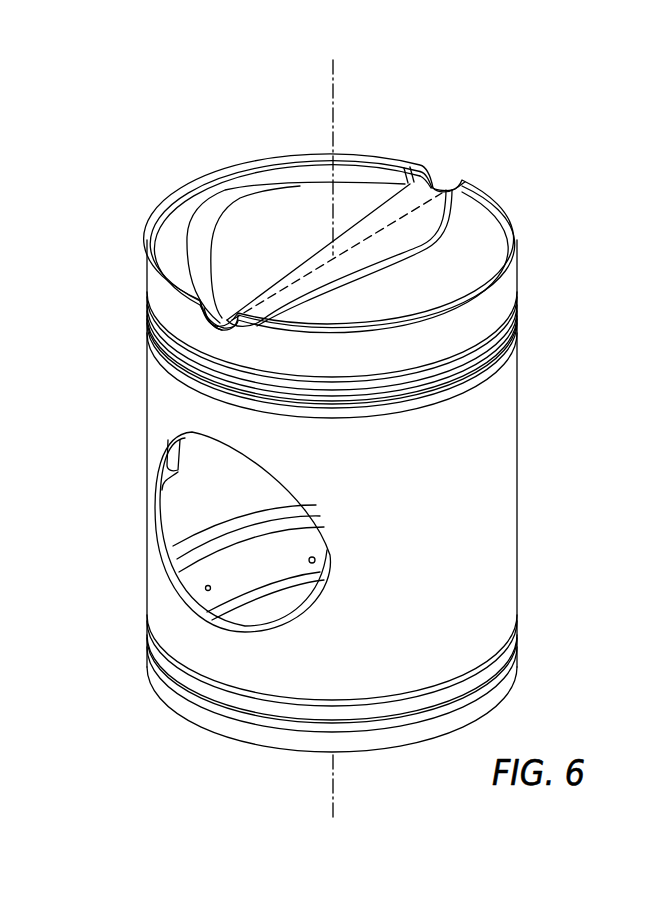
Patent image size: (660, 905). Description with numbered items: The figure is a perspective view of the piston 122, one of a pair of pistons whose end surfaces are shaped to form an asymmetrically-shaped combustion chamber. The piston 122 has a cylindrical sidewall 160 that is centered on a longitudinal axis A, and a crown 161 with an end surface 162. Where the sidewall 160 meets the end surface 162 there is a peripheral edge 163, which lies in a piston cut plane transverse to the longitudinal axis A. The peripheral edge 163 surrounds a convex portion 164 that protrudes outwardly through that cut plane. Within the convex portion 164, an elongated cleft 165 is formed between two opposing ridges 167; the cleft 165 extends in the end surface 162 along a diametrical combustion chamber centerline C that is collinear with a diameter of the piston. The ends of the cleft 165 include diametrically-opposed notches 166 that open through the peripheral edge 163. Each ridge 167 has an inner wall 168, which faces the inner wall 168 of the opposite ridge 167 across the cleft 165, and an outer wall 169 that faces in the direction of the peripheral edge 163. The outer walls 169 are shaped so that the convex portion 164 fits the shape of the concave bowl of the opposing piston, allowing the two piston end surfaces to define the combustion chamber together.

The piston 122 is at (523, 472).
The cylindrical sidewall 160 is at (517, 541).
The crown 161 is at (157, 290).
The end surface 162 is at (487, 175).
The peripheral edge 163 is at (237, 217).
The convex portion 164 is at (175, 240).
The elongated cleft 165 is at (187, 210).
The notches 166 is at (213, 323).
The ridges 167 is at (265, 183).
The inner wall 168 is at (290, 213).
The outer wall 169 is at (165, 213).
The longitudinal axis A is at (335, 127).
The combustion chamber centerline C is at (388, 213).